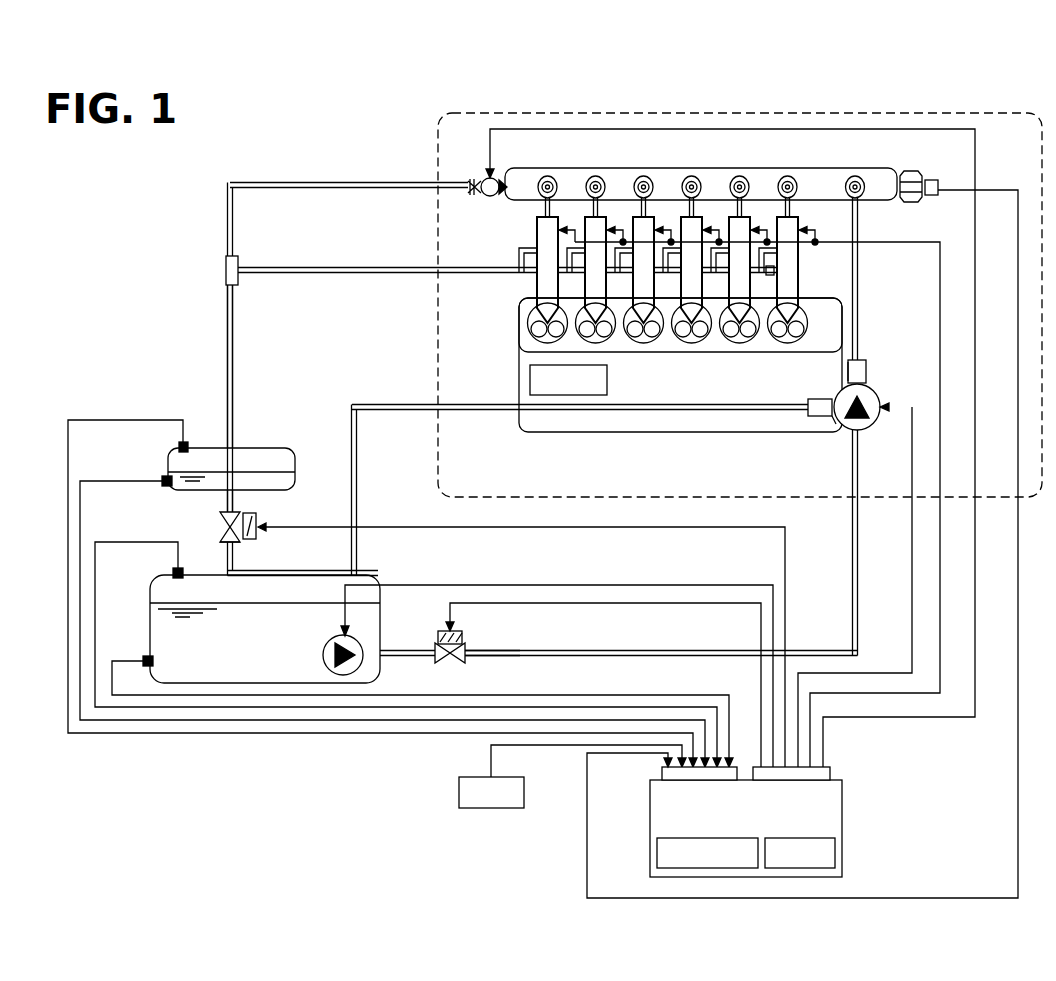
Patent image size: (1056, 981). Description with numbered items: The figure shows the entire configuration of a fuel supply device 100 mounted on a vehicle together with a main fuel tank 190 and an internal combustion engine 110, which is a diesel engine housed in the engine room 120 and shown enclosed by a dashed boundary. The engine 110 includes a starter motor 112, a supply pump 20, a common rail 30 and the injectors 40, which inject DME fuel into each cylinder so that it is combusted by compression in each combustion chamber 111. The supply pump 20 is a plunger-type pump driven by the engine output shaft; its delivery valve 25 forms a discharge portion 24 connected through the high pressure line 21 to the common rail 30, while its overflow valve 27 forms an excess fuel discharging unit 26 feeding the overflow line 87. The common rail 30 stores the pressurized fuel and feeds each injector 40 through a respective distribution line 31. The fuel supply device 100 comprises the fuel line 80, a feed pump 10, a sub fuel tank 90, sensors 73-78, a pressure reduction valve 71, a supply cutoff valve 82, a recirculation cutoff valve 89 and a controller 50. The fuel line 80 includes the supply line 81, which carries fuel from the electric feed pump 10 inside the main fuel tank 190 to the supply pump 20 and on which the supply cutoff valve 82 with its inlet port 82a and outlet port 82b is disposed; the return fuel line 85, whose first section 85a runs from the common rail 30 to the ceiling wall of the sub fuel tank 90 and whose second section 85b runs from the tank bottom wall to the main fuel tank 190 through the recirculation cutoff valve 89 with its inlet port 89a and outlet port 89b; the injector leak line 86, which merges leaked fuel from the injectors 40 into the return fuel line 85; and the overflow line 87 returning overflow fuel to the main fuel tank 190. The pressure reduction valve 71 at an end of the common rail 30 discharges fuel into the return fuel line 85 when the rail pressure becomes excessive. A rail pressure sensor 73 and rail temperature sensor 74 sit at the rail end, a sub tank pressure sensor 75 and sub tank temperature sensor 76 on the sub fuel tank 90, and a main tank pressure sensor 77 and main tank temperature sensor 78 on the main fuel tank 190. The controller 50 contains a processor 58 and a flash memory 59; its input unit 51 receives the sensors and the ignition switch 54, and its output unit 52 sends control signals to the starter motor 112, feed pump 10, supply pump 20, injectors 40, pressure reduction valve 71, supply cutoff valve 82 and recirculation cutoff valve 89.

The feed pump 10 is at (323, 655).
The supply pump 20 is at (876, 392).
The high pressure line 21 is at (860, 300).
The discharge portion 24 is at (873, 357).
The delivery valve 25 is at (848, 372).
The excess fuel discharging unit 26 is at (799, 424).
The overflow valve 27 is at (822, 430).
The common rail 30 is at (876, 202).
The distribution line 31 is at (568, 200).
The injector 40 is at (536, 292).
The controller 50 is at (650, 872).
The input unit 51 is at (662, 782).
The output unit 52 is at (810, 782).
The ignition switch 54 is at (459, 794).
The processor 58 is at (657, 853).
The flash memory 59 is at (835, 853).
The pressure reduction valve 71 is at (482, 197).
The rail pressure sensor 73 is at (920, 160).
The rail temperature sensor 74 is at (944, 166).
The sub tank pressure sensor 75 is at (186, 442).
The sub tank temperature sensor 76 is at (162, 478).
The main tank pressure sensor 77 is at (200, 557).
The main tank temperature sensor 78 is at (143, 661).
The fuel line 80 is at (835, 631).
The supply line 81 is at (860, 550).
The supply cutoff valve 82 is at (455, 634).
The inlet port 82a is at (435, 648).
The outlet port 82b is at (468, 652).
The return fuel line 85 is at (245, 216).
The first section 85a is at (227, 314).
The second section 85b is at (226, 508).
The injector leak line 86 is at (400, 267).
The overflow line 87 is at (378, 403).
The recirculation cutoff valve 89 is at (258, 532).
The inlet port 89a is at (248, 512).
The outlet port 89b is at (240, 542).
The sub fuel tank 90 is at (270, 447).
The fuel supply device 100 is at (905, 850).
The internal combustion engine 110 is at (531, 450).
The combustion chamber 111 is at (612, 335).
The starter motor 112 is at (528, 382).
The engine room 120 is at (436, 150).
The main fuel tank 190 is at (372, 574).